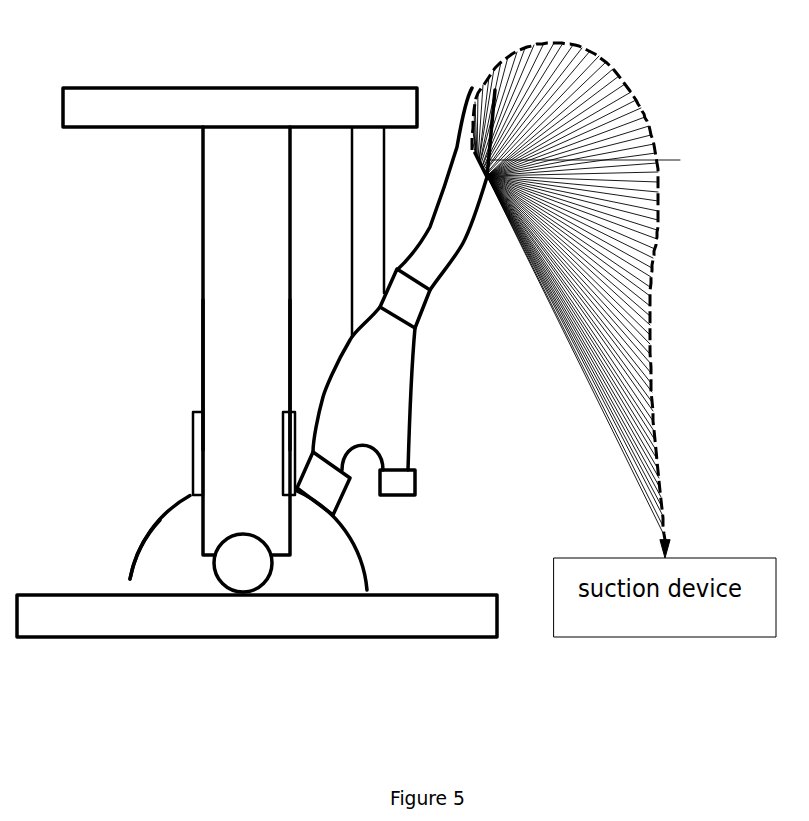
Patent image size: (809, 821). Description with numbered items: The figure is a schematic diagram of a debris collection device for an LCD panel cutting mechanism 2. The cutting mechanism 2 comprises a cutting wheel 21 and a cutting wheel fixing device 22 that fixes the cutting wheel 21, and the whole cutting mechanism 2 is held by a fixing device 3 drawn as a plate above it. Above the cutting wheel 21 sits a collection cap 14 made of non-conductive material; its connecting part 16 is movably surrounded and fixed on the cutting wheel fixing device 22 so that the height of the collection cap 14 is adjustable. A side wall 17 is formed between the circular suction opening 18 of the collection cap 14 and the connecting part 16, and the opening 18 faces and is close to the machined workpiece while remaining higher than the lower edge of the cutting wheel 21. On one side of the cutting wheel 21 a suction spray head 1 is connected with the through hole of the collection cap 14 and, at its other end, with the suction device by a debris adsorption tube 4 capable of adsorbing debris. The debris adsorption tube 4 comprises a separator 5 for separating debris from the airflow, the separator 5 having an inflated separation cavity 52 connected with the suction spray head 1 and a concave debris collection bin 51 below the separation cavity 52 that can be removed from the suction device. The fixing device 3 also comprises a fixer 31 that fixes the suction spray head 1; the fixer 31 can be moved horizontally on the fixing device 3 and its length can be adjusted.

The suction spray head 1 is at (320, 480).
The cutting mechanism 2 is at (190, 283).
The fixing device 3 is at (282, 105).
The debris adsorption tube 4 is at (458, 272).
The separator 5 is at (415, 363).
The collection cap 14 is at (143, 493).
The connecting part 16 is at (193, 493).
The side wall 17 is at (135, 535).
The opening 18 is at (173, 578).
The cutting wheel 21 is at (245, 572).
The cutting wheel fixing device 22 is at (237, 300).
The fixer 31 is at (487, 175).
The debris collection bin 51 is at (398, 480).
The separation cavity 52 is at (382, 418).